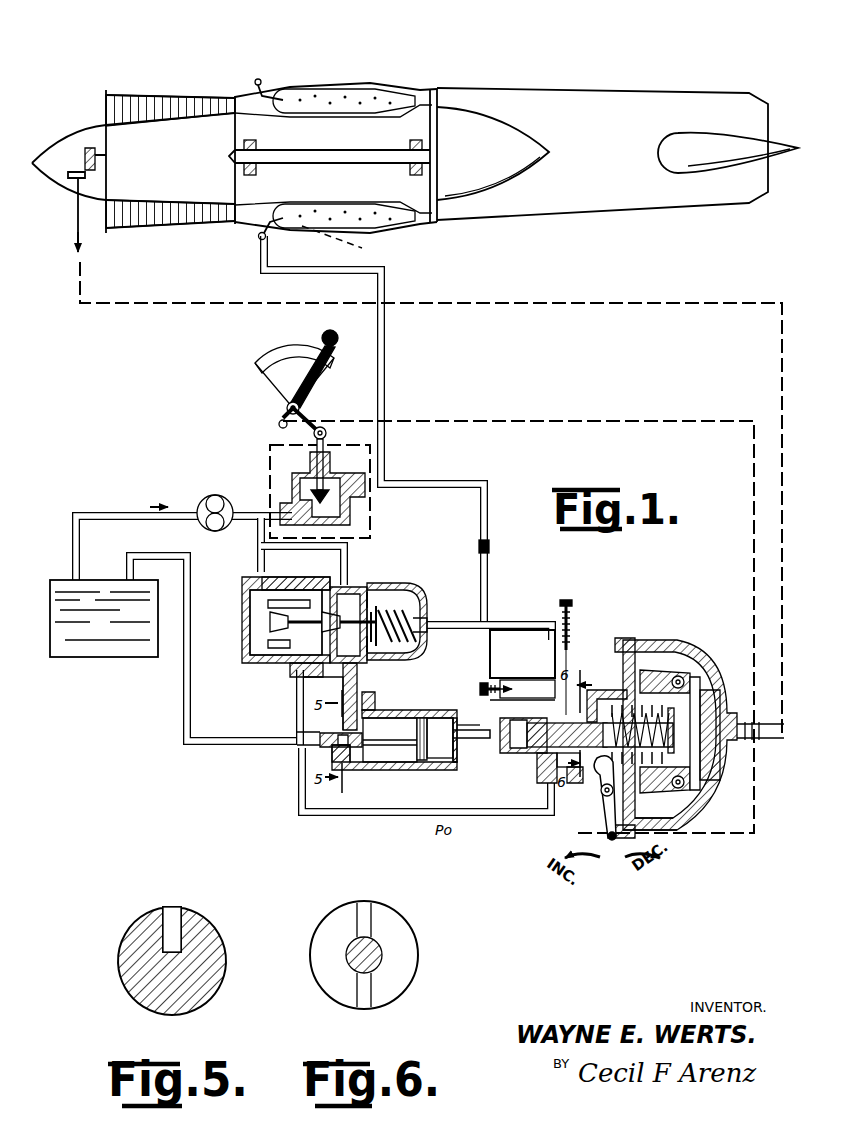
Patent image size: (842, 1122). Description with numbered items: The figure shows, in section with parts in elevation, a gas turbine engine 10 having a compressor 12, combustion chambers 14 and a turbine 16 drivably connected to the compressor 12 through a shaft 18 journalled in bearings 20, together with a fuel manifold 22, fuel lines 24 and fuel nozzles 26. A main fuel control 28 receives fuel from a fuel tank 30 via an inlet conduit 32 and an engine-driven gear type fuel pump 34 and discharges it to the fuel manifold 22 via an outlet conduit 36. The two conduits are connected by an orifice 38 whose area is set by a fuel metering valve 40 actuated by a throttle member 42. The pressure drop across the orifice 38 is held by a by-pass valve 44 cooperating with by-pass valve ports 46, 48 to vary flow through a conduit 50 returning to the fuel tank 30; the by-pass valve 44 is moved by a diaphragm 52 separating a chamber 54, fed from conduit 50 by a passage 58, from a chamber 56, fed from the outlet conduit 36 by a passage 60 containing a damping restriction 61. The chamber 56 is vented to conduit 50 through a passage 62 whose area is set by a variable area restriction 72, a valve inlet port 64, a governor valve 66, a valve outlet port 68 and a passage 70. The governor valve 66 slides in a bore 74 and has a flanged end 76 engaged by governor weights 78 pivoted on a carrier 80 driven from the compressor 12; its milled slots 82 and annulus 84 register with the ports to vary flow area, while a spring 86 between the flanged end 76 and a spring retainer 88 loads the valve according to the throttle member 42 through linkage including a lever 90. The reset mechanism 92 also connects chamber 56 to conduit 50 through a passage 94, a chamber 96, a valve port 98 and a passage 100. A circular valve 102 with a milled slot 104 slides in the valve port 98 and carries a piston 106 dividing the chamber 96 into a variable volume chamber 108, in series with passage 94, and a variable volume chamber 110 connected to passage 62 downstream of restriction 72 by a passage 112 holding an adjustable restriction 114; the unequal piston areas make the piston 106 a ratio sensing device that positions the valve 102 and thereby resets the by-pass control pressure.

In FIG. 1, the gas turbine engine 10 is at (304, 76).
In FIG. 1, the compressor 12 is at (165, 105).
In FIG. 1, the combustion chambers 14 is at (395, 226).
In FIG. 1, the turbine 16 is at (440, 92).
In FIG. 1, the shaft 18 is at (386, 155).
In FIG. 1, the bearings 20 is at (432, 176).
In FIG. 1, the fuel manifold 22 is at (256, 236).
In FIG. 1, the fuel lines 24 is at (280, 222).
In FIG. 1, the fuel nozzles 26 is at (345, 244).
In FIG. 1, the main fuel control 28 is at (265, 472).
In FIG. 1, the fuel tank 30 is at (118, 648).
In FIG. 1, the inlet conduit 32 is at (105, 513).
In FIG. 1, the fuel pump 34 is at (202, 524).
In FIG. 1, the outlet conduit 36 is at (386, 345).
In FIG. 1, the orifice 38 is at (358, 512).
In FIG. 1, the fuel metering valve 40 is at (270, 468).
In FIG. 1, the throttle member 42 is at (322, 337).
In FIG. 1, the by-pass valve 44 is at (252, 647).
In FIG. 1, the by-pass valve port 46 is at (250, 622).
In FIG. 1, the by-pass valve port 48 is at (318, 580).
In FIG. 1, the conduit 50 is at (257, 548).
In FIG. 1, the diaphragm 52 is at (398, 585).
In FIG. 1, the chamber 54 is at (362, 661).
In FIG. 1, the chamber 56 is at (432, 636).
In FIG. 1, the passage 58 is at (348, 550).
In FIG. 1, the passage 60 is at (480, 577).
In FIG. 1, the damping restriction 61 is at (490, 546).
In FIG. 1, the passage 62 is at (515, 610).
In FIG. 1, the valve inlet port 64 is at (580, 700).
In FIG. 1, the governor valve 66 is at (535, 718).
In FIG. 6, the governor valve 66 is at (392, 925).
In FIG. 1, the valve outlet port 68 is at (545, 766).
In FIG. 1, the passage 70 is at (478, 820).
In FIG. 1, the variable area restriction 72 is at (576, 615).
In FIG. 1, the bore 74 is at (548, 732).
In FIG. 1, the flanged end 76 is at (703, 660).
In FIG. 1, the governor weights 78 is at (690, 812).
In FIG. 1, the carrier 80 is at (745, 790).
In FIG. 6, the milled slots 82 is at (364, 905).
In FIG. 1, the annulus 84 is at (612, 785).
In FIG. 1, the spring 86 is at (665, 700).
In FIG. 1, the spring retainer 88 is at (625, 700).
In FIG. 1, the lever 90 is at (597, 838).
In FIG. 1, the reset mechanism 92 is at (380, 804).
In FIG. 1, the passage 94 is at (500, 630).
In FIG. 1, the chamber 96 is at (400, 758).
In FIG. 1, the valve port 98 is at (368, 710).
In FIG. 1, the passage 100 is at (305, 762).
In FIG. 1, the circular valve 102 is at (350, 772).
In FIG. 5, the circular valve 102 is at (205, 917).
In FIG. 1, the milled slot 104 is at (300, 727).
In FIG. 5, the milled slot 104 is at (172, 905).
In FIG. 1, the piston 106 is at (427, 704).
In FIG. 1, the variable volume chamber 108 is at (396, 770).
In FIG. 1, the variable volume chamber 110 is at (422, 760).
In FIG. 1, the passage 112 is at (468, 752).
In FIG. 1, the adjustable restriction 114 is at (501, 682).